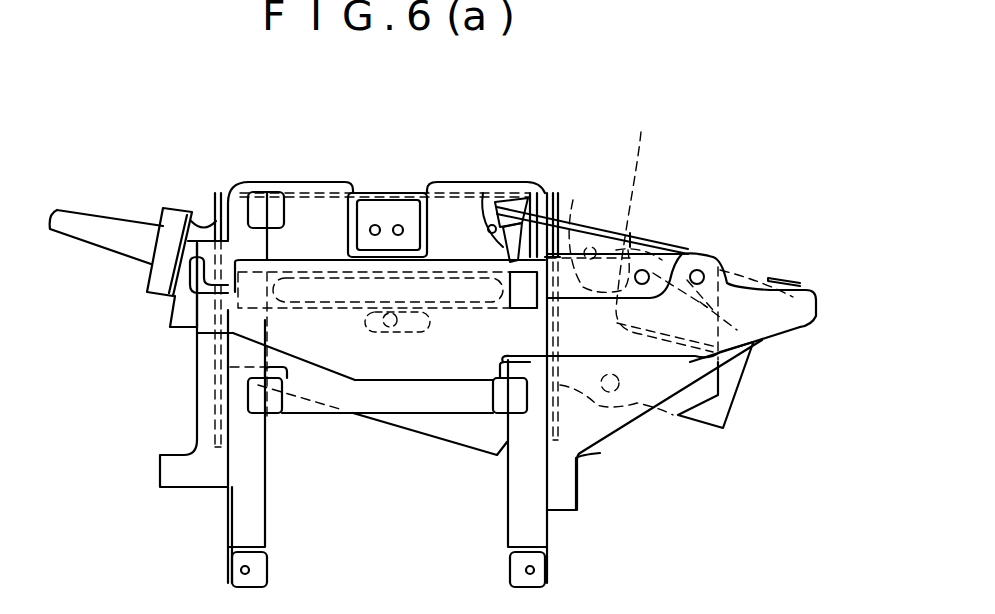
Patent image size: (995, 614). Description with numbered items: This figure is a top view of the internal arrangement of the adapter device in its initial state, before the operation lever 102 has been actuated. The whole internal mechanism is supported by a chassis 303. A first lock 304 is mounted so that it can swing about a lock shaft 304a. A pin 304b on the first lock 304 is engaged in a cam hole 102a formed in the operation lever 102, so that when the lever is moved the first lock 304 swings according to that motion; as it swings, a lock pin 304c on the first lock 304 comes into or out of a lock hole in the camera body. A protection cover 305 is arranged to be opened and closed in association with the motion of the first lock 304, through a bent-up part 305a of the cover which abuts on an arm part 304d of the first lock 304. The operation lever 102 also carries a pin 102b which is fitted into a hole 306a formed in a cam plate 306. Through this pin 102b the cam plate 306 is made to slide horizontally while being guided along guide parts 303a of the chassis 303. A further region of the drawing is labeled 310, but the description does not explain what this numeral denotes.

The operating lever 102 is at (74, 210).
The cam portion of lever 102a is at (664, 223).
The plate portion of lever 102b is at (389, 318).
The holder block 303 is at (388, 193).
The leg portions of holder 303a is at (258, 505).
The lock plate 304 is at (697, 253).
The holes of lock plate 304a is at (646, 270).
The engaging portion of lock plate 304b is at (573, 200).
The pivot pin of lock plate 304c is at (492, 229).
The tip portion of lock plate 304d is at (797, 278).
The lock arm 305 is at (783, 330).
The nose of lock arm 305a is at (810, 288).
The support bar 306 is at (307, 415).
The boss of support bar 306a is at (407, 327).
The housing cavity 310 is at (313, 287).